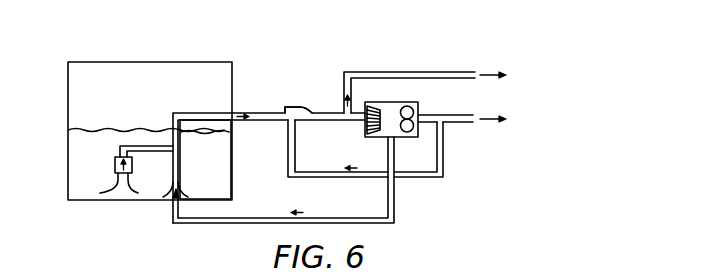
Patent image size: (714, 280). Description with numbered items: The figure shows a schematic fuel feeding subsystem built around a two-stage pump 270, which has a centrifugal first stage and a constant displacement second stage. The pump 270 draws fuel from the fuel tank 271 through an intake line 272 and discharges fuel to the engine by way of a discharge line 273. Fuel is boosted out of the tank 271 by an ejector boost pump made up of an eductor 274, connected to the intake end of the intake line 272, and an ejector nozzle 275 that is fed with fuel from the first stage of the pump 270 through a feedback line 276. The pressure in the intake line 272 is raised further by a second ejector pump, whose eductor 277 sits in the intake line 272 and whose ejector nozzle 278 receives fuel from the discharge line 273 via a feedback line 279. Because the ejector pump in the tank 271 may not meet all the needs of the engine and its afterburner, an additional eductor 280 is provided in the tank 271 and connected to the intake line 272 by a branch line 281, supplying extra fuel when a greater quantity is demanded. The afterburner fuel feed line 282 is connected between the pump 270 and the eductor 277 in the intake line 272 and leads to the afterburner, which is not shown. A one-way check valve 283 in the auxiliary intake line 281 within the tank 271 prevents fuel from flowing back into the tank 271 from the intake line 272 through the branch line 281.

The two-stage pump 270 is at (407, 101).
The fuel tank 271 is at (225, 152).
The intake line 272 is at (262, 112).
The discharge line 273 is at (474, 113).
The eductor 274 is at (184, 191).
The ejector nozzle 275 is at (173, 197).
The feedback line 276 is at (395, 203).
The eductor 277 is at (299, 107).
The ejector nozzle 278 is at (300, 123).
The feedback line 279 is at (444, 145).
The additional eductor 280 is at (107, 192).
The branch line 281 is at (155, 145).
The afterburner fuel feed line 282 is at (412, 71).
The one-way check valve 283 is at (115, 160).